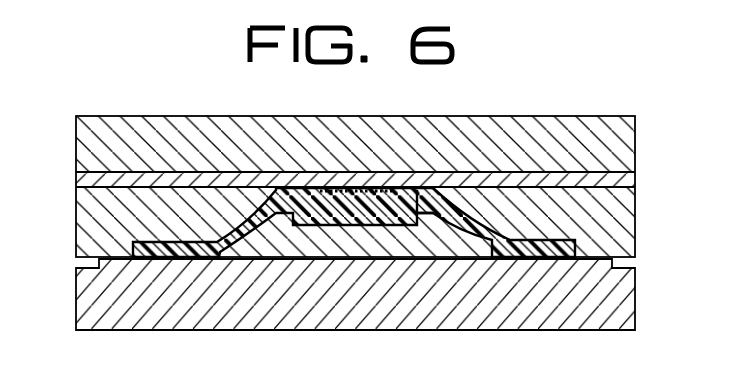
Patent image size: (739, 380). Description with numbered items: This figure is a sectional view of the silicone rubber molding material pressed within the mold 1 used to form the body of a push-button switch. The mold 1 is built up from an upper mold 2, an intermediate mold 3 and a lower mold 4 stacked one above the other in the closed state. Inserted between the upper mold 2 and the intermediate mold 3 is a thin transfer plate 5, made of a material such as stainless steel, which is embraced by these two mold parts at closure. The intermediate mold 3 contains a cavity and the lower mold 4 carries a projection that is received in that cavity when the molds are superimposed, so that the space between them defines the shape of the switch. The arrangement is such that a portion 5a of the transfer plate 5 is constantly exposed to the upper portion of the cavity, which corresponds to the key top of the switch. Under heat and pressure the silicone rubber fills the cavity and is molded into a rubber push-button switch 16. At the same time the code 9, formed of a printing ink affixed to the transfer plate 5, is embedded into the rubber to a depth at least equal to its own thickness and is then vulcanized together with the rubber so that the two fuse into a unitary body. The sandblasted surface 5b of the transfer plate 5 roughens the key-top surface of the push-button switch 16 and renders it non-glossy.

The mold 1 is at (213, 108).
The upper mold 2 is at (118, 128).
The intermediate mold 3 is at (608, 240).
The lower mold 4 is at (289, 309).
The transfer plate 5 is at (82, 177).
The portion of the transfer plate 5a is at (335, 178).
The sandblasted surface 5b is at (293, 190).
The code 9 is at (352, 195).
The push-button switch 16 is at (415, 197).